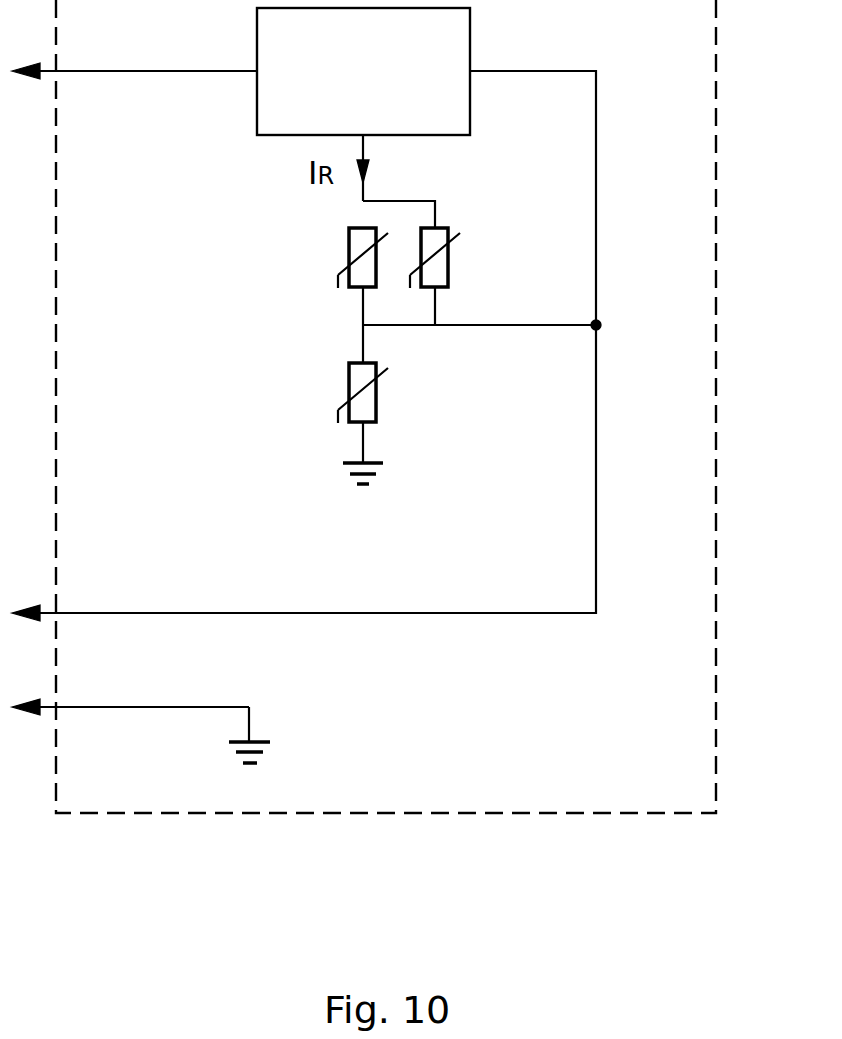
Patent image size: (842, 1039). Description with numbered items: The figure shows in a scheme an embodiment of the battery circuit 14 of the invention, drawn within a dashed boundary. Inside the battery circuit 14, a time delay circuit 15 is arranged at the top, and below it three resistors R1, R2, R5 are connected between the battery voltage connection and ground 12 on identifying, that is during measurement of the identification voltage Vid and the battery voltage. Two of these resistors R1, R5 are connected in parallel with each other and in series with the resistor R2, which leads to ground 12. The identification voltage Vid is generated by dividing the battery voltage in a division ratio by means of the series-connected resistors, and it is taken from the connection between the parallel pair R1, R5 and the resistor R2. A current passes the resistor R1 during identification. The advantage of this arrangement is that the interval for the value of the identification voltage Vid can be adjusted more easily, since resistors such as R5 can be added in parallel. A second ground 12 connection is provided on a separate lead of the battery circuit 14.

The battery circuit 14 is at (388, 813).
The time delay circuit 15 is at (470, 48).
The resistor R1 is at (349, 251).
The resistor R5 is at (453, 258).
The resistor R2 is at (349, 386).
The identification voltage Vid is at (604, 322).
The ground 12 is at (386, 462).